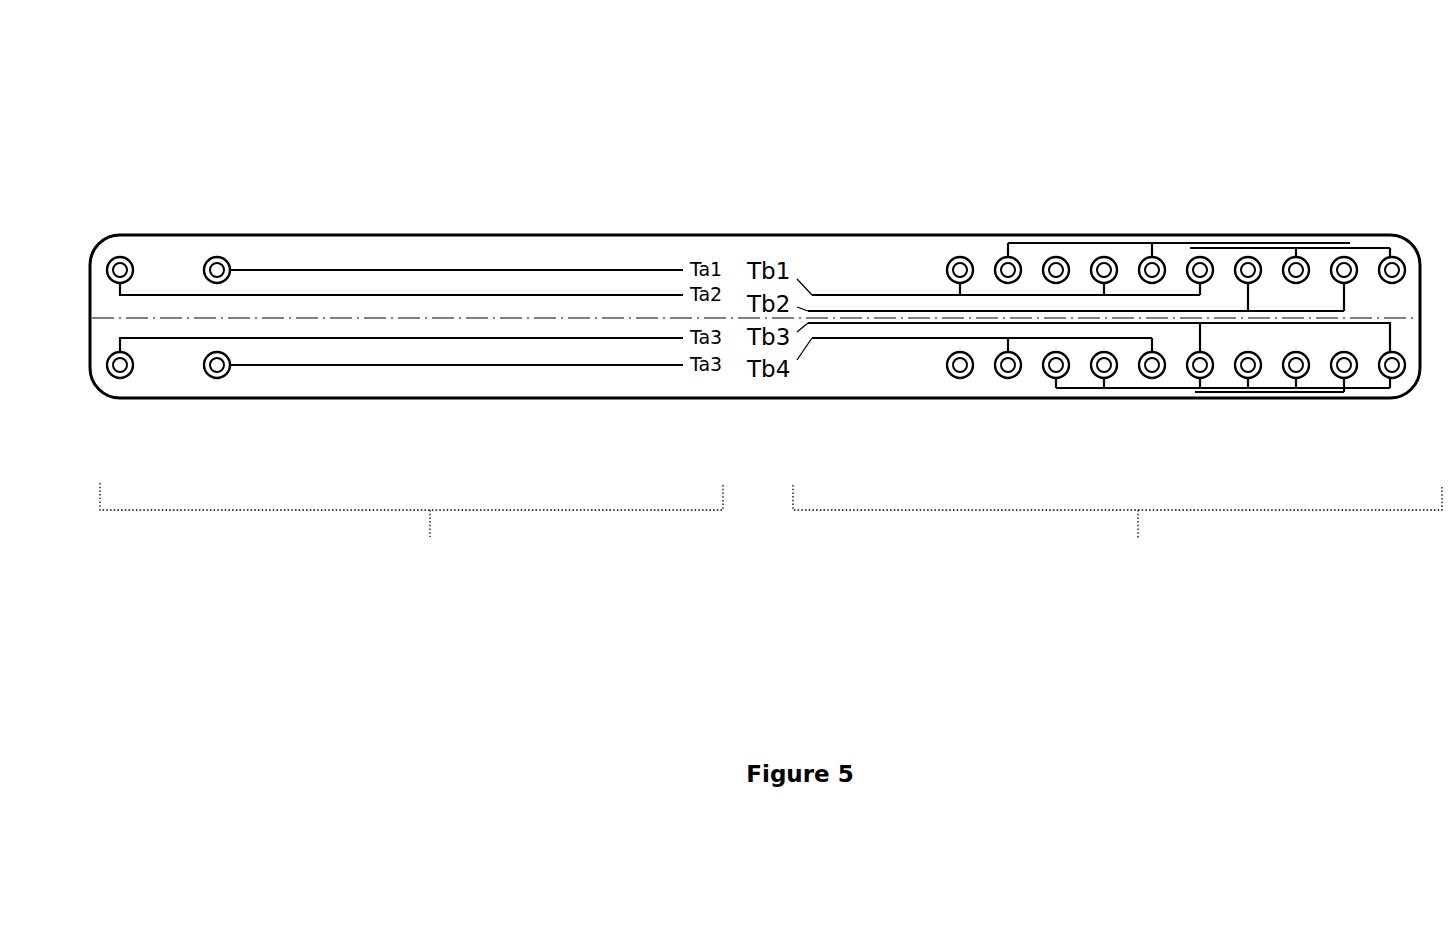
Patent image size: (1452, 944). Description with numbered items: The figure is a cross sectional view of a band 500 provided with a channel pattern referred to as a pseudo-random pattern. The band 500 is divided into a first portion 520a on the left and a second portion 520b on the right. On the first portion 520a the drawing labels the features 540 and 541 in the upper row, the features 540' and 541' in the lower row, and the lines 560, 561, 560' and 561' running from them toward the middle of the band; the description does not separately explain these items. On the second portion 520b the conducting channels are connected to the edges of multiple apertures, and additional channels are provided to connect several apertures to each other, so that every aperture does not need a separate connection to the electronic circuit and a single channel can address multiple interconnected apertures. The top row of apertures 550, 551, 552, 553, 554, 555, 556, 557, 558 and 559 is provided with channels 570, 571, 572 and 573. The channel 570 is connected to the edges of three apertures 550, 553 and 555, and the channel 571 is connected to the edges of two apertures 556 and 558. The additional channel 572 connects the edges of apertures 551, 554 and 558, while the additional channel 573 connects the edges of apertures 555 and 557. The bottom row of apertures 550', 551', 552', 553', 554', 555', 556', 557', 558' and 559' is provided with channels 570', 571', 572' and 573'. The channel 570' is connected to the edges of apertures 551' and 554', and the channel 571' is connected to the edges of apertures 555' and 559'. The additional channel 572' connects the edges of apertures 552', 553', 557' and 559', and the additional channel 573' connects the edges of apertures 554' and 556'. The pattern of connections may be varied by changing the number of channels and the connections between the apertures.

The band 500 is at (228, 600).
The first portion 520a is at (411, 531).
The second portion 520b is at (1117, 533).
The first terminal pad 540 is at (139, 227).
The second terminal pad 541 is at (250, 226).
The first terminal pad (second side) 540' is at (154, 405).
The second terminal pad (second side) 541' is at (248, 405).
The first trace 560 is at (456, 180).
The second trace 561 is at (401, 206).
The first trace (second side) 560' is at (456, 422).
The second trace (second side) 561' is at (401, 408).
The channel 570 is at (1006, 188).
The channel 571 is at (1076, 212).
The additional channel 572 is at (1179, 144).
The additional channel 573 is at (1290, 144).
The channel 570' is at (982, 420).
The channel 571' is at (1099, 409).
The additional channel 572' is at (1223, 441).
The additional channel 573' is at (1252, 439).
The aperture 550 is at (950, 233).
The aperture 551 is at (995, 206).
The aperture 552 is at (1069, 228).
The aperture 553 is at (1117, 206).
The aperture 554 is at (1165, 228).
The aperture 555 is at (1217, 206).
The aperture 556 is at (1265, 228).
The aperture 557 is at (1314, 206).
The aperture 558 is at (1361, 228).
The aperture 559 is at (1412, 206).
The aperture 550' is at (960, 365).
The aperture 551' is at (986, 398).
The aperture 552' is at (1038, 400).
The aperture 553' is at (1095, 408).
The aperture 554' is at (1150, 403).
The aperture 555' is at (1216, 403).
The aperture 556' is at (1271, 413).
The aperture 557' is at (1319, 400).
The aperture 558' is at (1344, 365).
The aperture 559' is at (1409, 400).